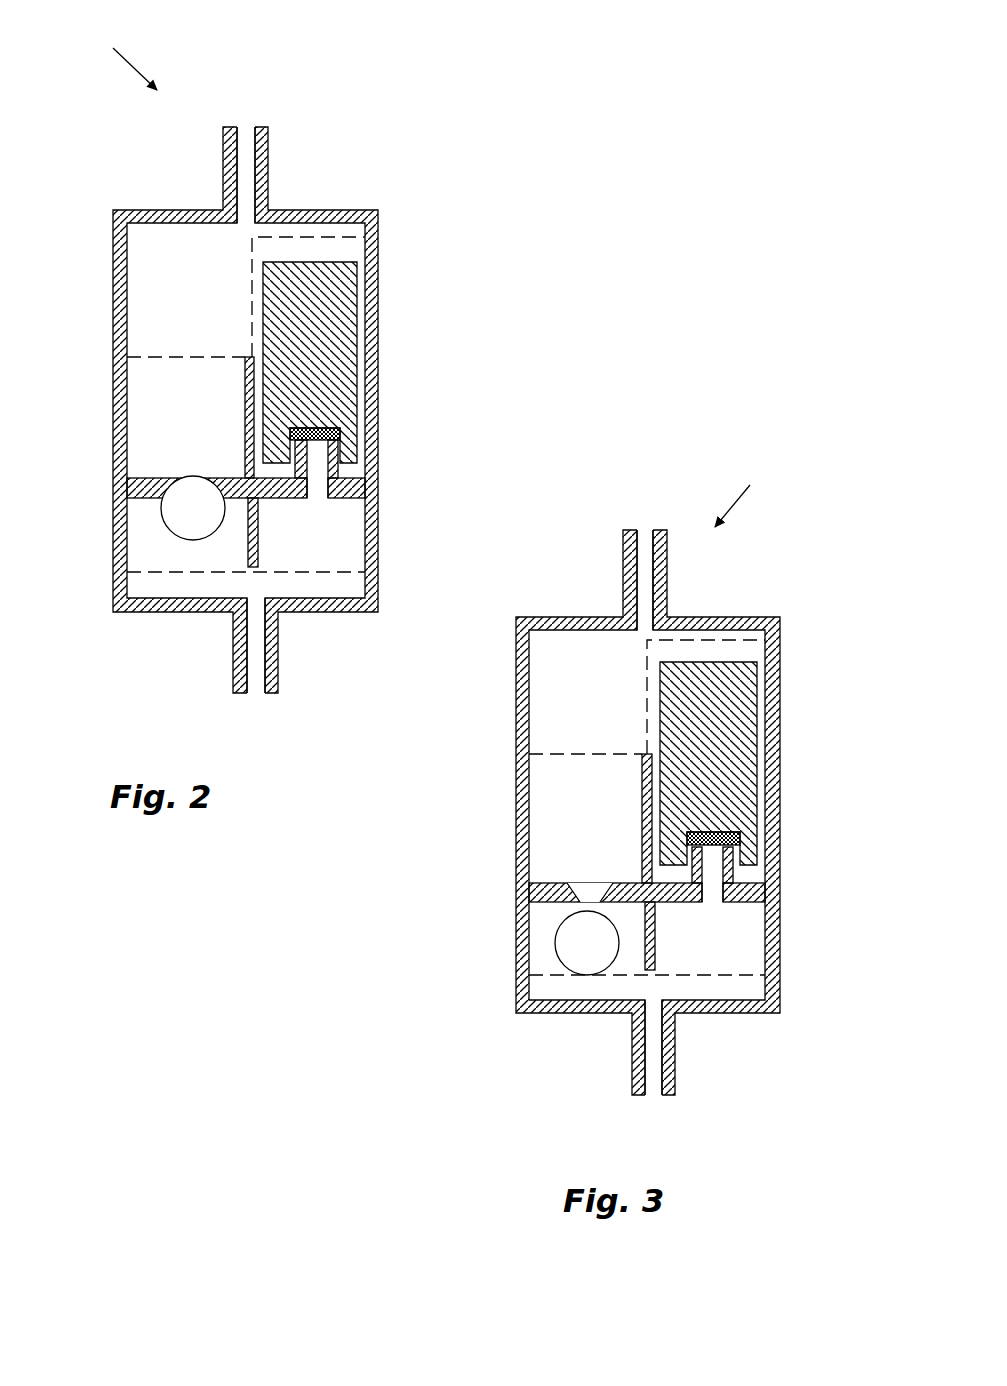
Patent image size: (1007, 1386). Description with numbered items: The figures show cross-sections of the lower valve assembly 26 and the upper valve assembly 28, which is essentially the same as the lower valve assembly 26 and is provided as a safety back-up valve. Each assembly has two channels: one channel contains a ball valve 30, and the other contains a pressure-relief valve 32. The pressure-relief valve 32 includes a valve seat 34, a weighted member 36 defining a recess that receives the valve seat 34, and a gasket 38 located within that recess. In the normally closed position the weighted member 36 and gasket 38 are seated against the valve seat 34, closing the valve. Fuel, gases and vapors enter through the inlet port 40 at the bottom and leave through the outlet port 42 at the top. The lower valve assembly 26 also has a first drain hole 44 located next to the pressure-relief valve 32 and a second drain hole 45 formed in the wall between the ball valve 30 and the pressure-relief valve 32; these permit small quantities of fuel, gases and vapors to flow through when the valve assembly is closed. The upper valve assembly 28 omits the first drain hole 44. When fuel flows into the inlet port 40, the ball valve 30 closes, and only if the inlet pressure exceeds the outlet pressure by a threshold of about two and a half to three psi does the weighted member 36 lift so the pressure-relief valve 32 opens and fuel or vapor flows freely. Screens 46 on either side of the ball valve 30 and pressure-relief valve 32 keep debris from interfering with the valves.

In FIG. 2, the lower valve assembly 26 is at (113, 52).
In FIG. 3, the upper valve assembly 28 is at (760, 493).
In FIG. 2, the ball valve 30 is at (182, 515).
In FIG. 3, the ball valve 30 is at (582, 950).
In FIG. 2, the pressure-relief valve 32 is at (340, 310).
In FIG. 3, the pressure-relief valve 32 is at (740, 700).
In FIG. 2, the valve seat 34 is at (313, 472).
In FIG. 3, the valve seat 34 is at (713, 882).
In FIG. 2, the weighted member 36 is at (318, 263).
In FIG. 3, the weighted member 36 is at (713, 670).
In FIG. 2, the gasket 38 is at (317, 427).
In FIG. 3, the gasket 38 is at (720, 835).
In FIG. 2, the inlet port 40 is at (260, 693).
In FIG. 3, the inlet port 40 is at (655, 1095).
In FIG. 2, the outlet port 42 is at (245, 127).
In FIG. 3, the outlet port 42 is at (645, 530).
In FIG. 2, the first drain hole 44 is at (260, 498).
In FIG. 3, the first drain hole 44 is at (648, 862).
In FIG. 2, the second drain hole 45 is at (245, 473).
In FIG. 3, the second drain hole 45 is at (643, 878).
In FIG. 2, the screens 46 is at (172, 357).
In FIG. 3, the screens 46 is at (608, 754).